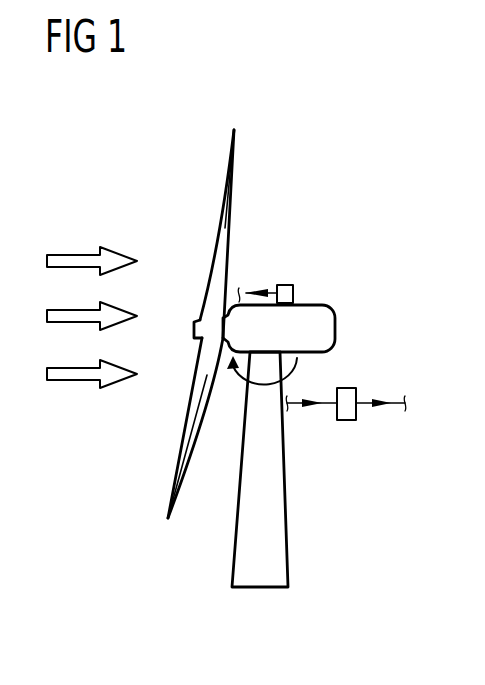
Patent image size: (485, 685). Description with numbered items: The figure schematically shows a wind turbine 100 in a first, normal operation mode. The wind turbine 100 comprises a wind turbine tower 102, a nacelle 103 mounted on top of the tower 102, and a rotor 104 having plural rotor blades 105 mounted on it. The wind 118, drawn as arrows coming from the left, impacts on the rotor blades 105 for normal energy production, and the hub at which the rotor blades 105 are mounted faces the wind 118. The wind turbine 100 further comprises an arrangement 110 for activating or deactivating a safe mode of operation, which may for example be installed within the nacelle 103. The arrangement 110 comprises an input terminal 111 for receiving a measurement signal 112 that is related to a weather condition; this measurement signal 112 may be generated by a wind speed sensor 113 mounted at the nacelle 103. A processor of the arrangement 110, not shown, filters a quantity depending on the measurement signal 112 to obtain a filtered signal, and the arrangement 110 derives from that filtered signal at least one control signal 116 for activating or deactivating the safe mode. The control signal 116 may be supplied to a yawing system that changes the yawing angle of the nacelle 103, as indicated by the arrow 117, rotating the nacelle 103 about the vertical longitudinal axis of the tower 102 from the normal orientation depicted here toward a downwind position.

The wind turbine 100 is at (148, 118).
The wind turbine tower 102 is at (285, 521).
The nacelle 103 is at (336, 328).
The rotor 104 is at (194, 322).
The rotor blades 105 is at (226, 223).
The arrangement 110 is at (348, 421).
The input terminal 111 is at (338, 388).
The measurement signal 112 is at (246, 291).
The wind speed sensor 113 is at (294, 292).
The control signal 116 is at (393, 407).
The arrow indicating yawing 117 is at (234, 386).
The wind 118 is at (73, 381).